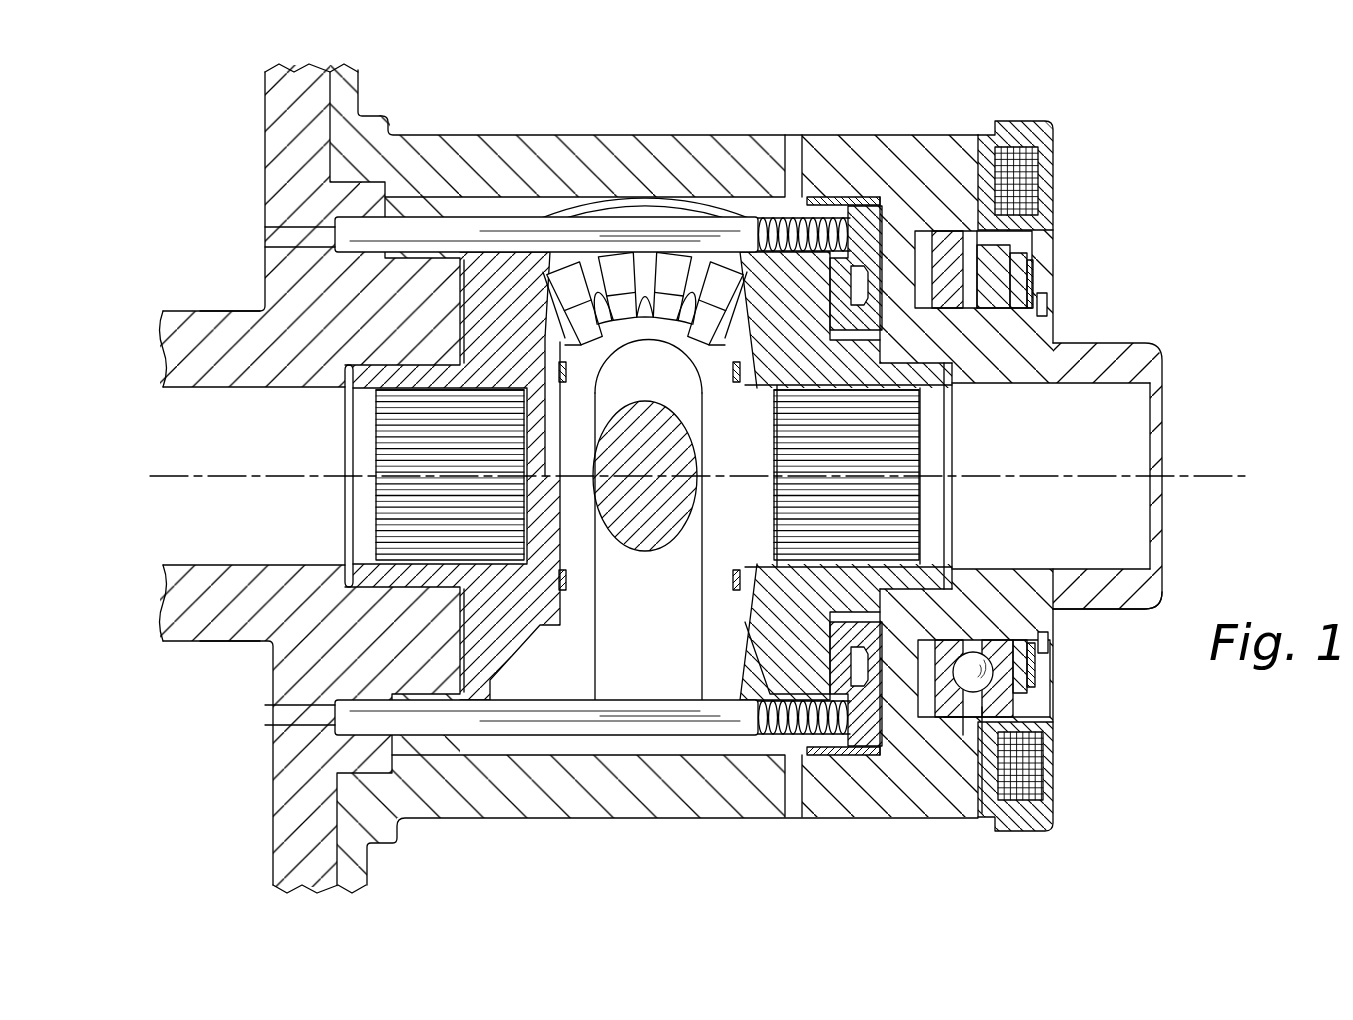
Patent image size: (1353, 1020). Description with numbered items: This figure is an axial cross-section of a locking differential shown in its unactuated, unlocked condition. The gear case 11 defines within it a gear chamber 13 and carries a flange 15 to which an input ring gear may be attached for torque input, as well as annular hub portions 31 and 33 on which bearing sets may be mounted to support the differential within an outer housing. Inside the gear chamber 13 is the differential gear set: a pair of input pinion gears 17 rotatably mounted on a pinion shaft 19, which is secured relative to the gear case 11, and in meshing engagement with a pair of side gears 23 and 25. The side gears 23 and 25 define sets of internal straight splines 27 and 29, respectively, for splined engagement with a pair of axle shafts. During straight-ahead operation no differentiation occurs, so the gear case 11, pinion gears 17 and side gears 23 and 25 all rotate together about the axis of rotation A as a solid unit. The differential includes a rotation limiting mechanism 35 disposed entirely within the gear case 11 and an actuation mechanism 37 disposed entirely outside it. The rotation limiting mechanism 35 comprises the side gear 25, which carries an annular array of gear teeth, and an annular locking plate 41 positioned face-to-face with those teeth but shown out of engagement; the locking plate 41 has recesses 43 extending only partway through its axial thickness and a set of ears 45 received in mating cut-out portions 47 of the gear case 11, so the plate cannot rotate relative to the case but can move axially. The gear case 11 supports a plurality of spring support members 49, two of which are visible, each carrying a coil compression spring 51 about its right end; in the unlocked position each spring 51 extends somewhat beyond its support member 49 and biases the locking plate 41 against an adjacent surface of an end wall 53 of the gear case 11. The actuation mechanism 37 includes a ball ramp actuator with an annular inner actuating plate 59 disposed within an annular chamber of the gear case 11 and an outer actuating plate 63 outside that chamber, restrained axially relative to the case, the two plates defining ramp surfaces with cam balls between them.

The gear case 11 is at (576, 135).
The gear chamber 13 is at (636, 660).
The flange 15 is at (358, 92).
The input pinion gears 17 is at (684, 250).
The pinion shaft 19 is at (644, 552).
The side gear 23 is at (413, 384).
The side gear 25 is at (932, 573).
The internal straight splines 27 is at (395, 507).
The internal straight splines 29 is at (917, 447).
The annular hub portion 31 is at (211, 310).
The annular hub portion 33 is at (1120, 345).
The rotation limiting mechanism 35 is at (806, 663).
The actuation mechanism 37 is at (1026, 706).
The annular locking plate 41 is at (876, 696).
The recesses 43 is at (862, 284).
The ears 45 is at (860, 232).
The cut-out portions 47 is at (822, 205).
The spring support members 49 is at (515, 222).
The coil compression spring 51 is at (778, 220).
The end wall 53 is at (907, 638).
The annular inner actuating plate 59 is at (950, 700).
The outer actuating plate 63 is at (997, 660).
The axis of rotation A is at (1210, 470).